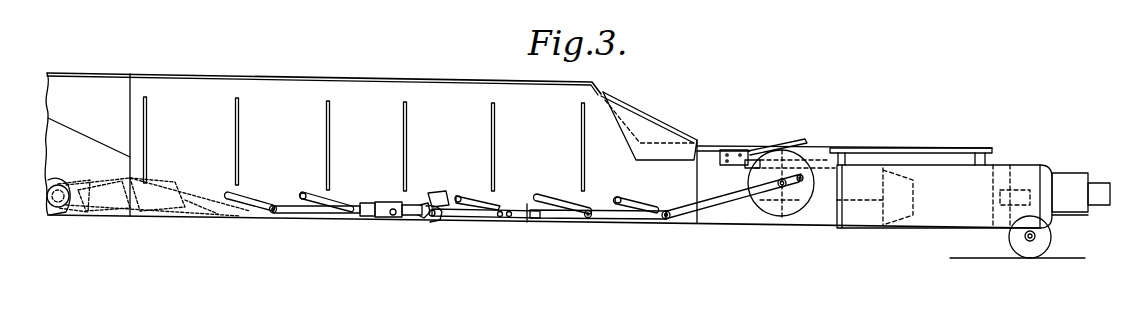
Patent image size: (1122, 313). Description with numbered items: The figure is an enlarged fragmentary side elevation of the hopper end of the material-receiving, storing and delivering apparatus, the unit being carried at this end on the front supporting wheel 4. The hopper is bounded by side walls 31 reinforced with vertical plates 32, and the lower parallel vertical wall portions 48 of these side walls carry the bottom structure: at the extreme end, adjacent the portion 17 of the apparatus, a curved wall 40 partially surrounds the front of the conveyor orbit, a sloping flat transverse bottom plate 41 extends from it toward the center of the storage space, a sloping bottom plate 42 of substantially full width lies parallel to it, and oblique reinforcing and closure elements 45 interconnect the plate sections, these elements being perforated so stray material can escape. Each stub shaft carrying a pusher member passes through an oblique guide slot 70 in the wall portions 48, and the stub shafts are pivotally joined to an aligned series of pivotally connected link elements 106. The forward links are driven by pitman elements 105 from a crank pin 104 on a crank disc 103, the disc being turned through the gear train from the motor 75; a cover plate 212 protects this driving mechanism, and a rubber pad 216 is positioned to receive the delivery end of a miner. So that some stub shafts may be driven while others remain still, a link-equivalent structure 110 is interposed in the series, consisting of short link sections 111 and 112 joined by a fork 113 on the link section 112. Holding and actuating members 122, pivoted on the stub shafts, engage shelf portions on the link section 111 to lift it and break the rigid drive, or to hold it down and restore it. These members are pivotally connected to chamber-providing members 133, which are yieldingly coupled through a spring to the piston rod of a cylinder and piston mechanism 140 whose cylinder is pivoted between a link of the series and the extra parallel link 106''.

The side walls 31 is at (465, 80).
The vertical plates 32 is at (403, 126).
The frame end 17 is at (48, 219).
The curved wall 40 is at (78, 214).
The sloping flat transverse bottom plate 41 is at (118, 210).
The sloping bottom plate 42 is at (172, 205).
The oblique reinforcing and closure elements 45 is at (205, 212).
The oblique guide slot 70 is at (300, 199).
The link elements 106 is at (470, 230).
The extra parallel link 106'' is at (486, 231).
The short link section 112 is at (362, 217).
The fork 113 is at (386, 218).
The short link section 111 is at (408, 216).
The holding and actuating members 122 is at (423, 226).
The link-equivalent structure 110 is at (433, 225).
The chamber-providing members 133 is at (434, 192).
The cylinder and piston mechanism 140 is at (467, 200).
The lower wall portions 48 is at (527, 218).
The pitman elements 105 is at (723, 200).
The crank disc 103 is at (800, 205).
The crank pin 104 is at (803, 173).
The rubber pad 216 is at (786, 150).
The cover plate 212 is at (950, 142).
The motor 75 is at (872, 172).
The front supporting wheel 4 is at (1045, 246).